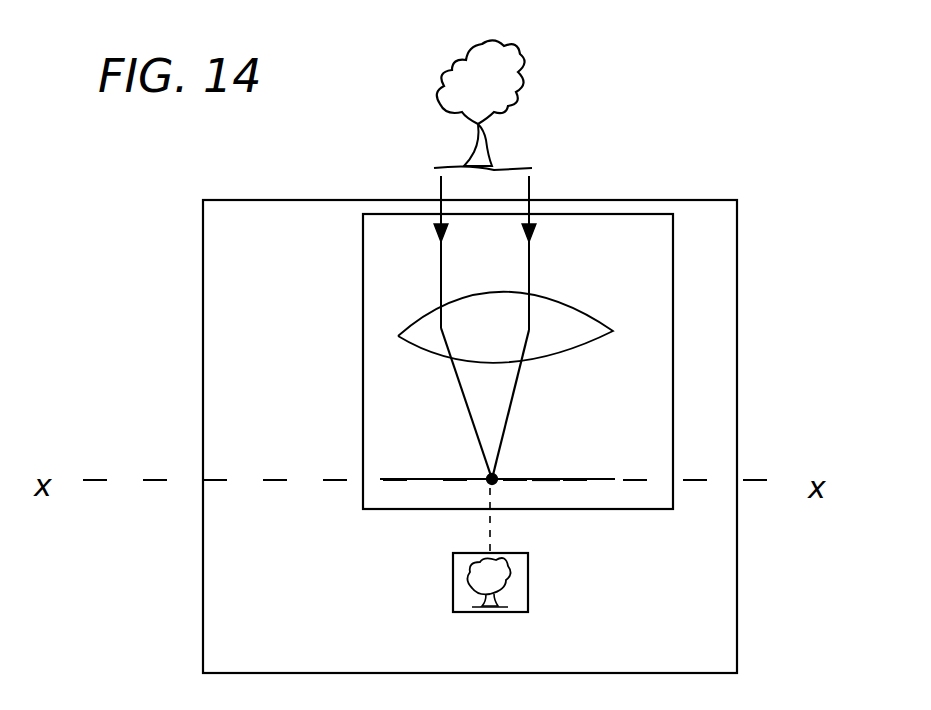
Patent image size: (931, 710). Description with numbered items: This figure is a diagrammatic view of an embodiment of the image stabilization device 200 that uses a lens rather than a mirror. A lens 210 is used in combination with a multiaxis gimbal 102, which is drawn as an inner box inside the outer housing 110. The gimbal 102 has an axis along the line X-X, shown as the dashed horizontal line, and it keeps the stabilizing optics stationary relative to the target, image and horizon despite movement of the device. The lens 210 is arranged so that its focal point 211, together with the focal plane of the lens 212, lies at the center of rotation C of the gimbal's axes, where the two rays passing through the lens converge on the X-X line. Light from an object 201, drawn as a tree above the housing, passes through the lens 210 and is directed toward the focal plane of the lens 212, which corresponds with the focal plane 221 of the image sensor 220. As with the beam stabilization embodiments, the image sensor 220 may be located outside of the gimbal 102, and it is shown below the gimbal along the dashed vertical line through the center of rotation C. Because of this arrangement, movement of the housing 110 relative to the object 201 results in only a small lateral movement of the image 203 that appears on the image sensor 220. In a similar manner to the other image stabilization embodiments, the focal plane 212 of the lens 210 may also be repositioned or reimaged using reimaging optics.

The image stabilization device 200 is at (104, 226).
The object 201 is at (540, 78).
The multiaxis gimbal 102 is at (363, 280).
The housing 110 is at (738, 290).
The lens 210 is at (562, 306).
The focal point of the lens 211 is at (500, 476).
The focal plane of the lens 212 is at (574, 476).
The focal plane of the image sensor 221 is at (534, 482).
The image sensor 220 is at (530, 575).
The image 203 is at (453, 578).
The center of rotation C is at (488, 482).